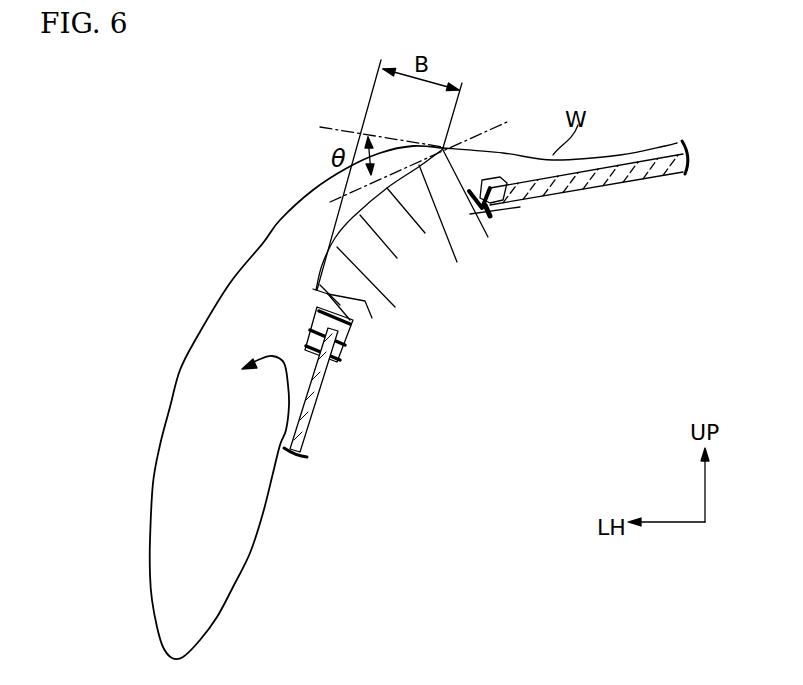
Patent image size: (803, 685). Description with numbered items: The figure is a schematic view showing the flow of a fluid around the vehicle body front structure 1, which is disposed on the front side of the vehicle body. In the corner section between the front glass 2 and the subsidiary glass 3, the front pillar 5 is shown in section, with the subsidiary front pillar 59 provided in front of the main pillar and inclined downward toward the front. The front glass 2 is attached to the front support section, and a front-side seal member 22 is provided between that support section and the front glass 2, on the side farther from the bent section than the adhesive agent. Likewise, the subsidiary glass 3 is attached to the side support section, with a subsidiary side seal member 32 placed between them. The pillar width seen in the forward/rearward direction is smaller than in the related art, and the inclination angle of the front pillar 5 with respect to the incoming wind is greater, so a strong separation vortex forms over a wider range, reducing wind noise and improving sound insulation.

The vehicle body front structure 1 is at (660, 88).
The front glass 2 is at (597, 178).
The subsidiary glass 3 is at (307, 409).
The front pillar 5 is at (413, 250).
The front-side seal member 22 is at (499, 208).
The subsidiary side seal member 32 is at (344, 338).
The subsidiary front pillar 59 is at (420, 258).